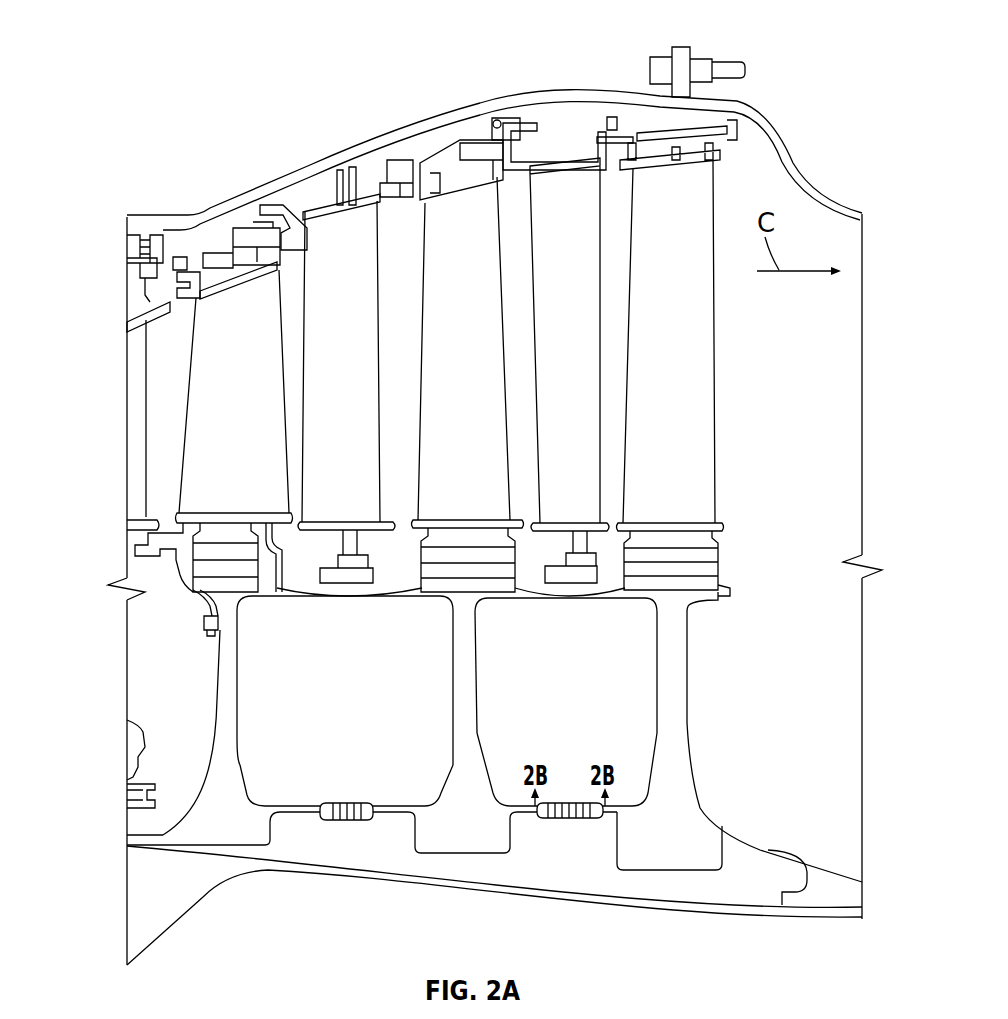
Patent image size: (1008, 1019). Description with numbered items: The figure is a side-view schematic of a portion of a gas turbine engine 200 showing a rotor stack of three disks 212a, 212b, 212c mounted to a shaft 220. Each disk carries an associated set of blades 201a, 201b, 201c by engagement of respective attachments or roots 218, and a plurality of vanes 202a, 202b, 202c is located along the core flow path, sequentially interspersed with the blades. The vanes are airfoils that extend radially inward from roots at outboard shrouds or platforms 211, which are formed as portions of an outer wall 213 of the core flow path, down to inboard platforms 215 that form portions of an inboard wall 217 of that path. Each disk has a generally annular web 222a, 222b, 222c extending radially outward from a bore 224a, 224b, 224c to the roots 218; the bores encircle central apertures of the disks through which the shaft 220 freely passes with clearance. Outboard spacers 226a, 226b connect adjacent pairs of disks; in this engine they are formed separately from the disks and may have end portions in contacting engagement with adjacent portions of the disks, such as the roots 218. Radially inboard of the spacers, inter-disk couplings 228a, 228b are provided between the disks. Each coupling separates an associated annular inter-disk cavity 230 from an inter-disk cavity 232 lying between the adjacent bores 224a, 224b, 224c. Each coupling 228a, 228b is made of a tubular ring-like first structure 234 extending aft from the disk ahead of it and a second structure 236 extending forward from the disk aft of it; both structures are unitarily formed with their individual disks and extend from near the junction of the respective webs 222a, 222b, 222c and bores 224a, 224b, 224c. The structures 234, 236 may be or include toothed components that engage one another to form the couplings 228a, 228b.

The gas turbine engine 200 is at (195, 62).
The blades 201a is at (260, 463).
The blades 201b is at (492, 483).
The blades 201c is at (702, 378).
The vane 202a is at (142, 398).
The vane 202b is at (370, 344).
The vane 202c is at (598, 299).
The outboard shroud/platform 211 is at (537, 158).
The outer wall 213 is at (607, 178).
The inboard platform 215 is at (308, 518).
The inboard wall 217 is at (392, 505).
The attachment / root 218 is at (193, 568).
The shaft 220 is at (500, 888).
The disk 212a is at (228, 706).
The disk 212b is at (458, 752).
The disk 212c is at (675, 676).
The web 222a is at (224, 763).
The web 222b is at (472, 715).
The web 222c is at (673, 760).
The bore 224a is at (253, 832).
The bore 224b is at (495, 834).
The bore 224c is at (700, 861).
The outboard spacer 226a is at (357, 618).
The outboard spacer 226b is at (538, 610).
The inter-disk coupling 228a is at (348, 798).
The inter-disk coupling 228b is at (568, 828).
The annular inter-disk cavity 230 is at (540, 751).
The inter-disk cavity 232 is at (375, 856).
The first structure 234 is at (303, 812).
The second structure 236 is at (398, 814).